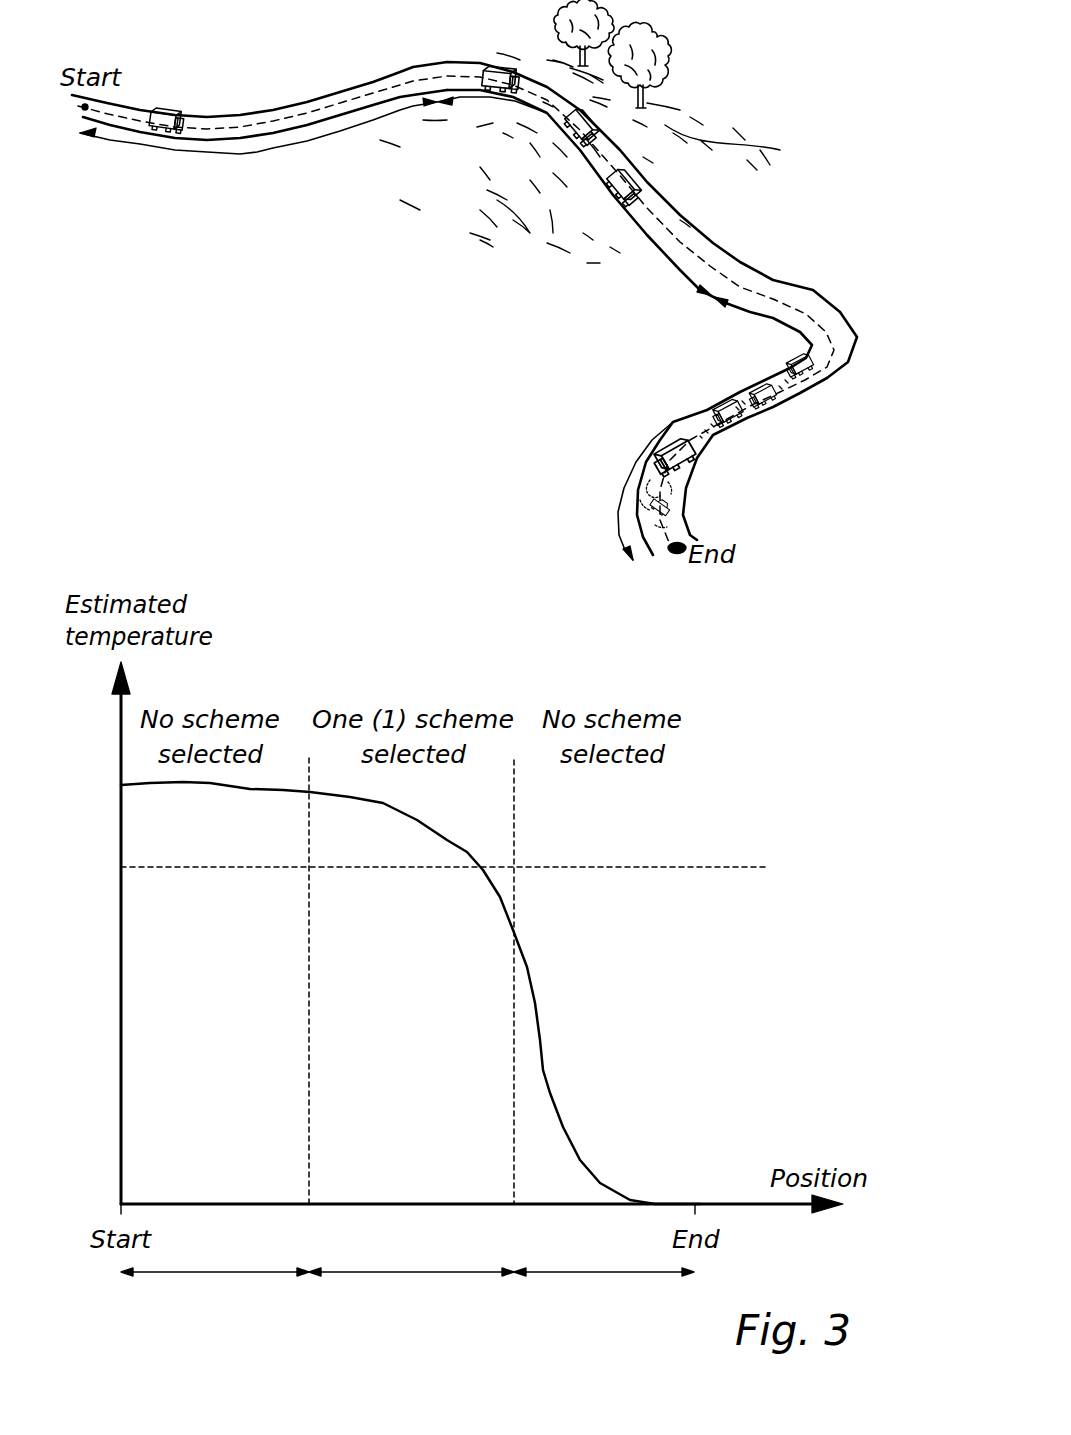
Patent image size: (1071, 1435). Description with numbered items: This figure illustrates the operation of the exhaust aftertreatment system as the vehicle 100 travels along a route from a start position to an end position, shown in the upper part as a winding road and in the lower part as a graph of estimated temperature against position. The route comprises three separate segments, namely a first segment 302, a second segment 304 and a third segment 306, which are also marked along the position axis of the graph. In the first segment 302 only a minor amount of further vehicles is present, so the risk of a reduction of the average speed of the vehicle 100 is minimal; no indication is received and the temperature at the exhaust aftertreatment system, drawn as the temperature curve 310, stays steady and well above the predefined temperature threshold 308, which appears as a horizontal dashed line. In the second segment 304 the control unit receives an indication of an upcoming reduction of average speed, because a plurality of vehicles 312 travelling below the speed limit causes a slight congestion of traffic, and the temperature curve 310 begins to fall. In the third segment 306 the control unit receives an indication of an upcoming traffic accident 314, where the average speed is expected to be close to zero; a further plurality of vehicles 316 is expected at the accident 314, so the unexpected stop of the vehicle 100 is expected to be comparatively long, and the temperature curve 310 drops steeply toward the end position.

The vehicle 100 is at (163, 116).
The first segment 302 is at (257, 152).
The second segment 304 is at (600, 188).
The third segment 306 is at (683, 419).
The predefined temperature threshold 308 is at (255, 790).
The temperature curve 310 is at (537, 1005).
The plurality of vehicles 312 is at (492, 80).
The traffic accident 314 is at (708, 490).
The further plurality of vehicles 316 is at (814, 368).